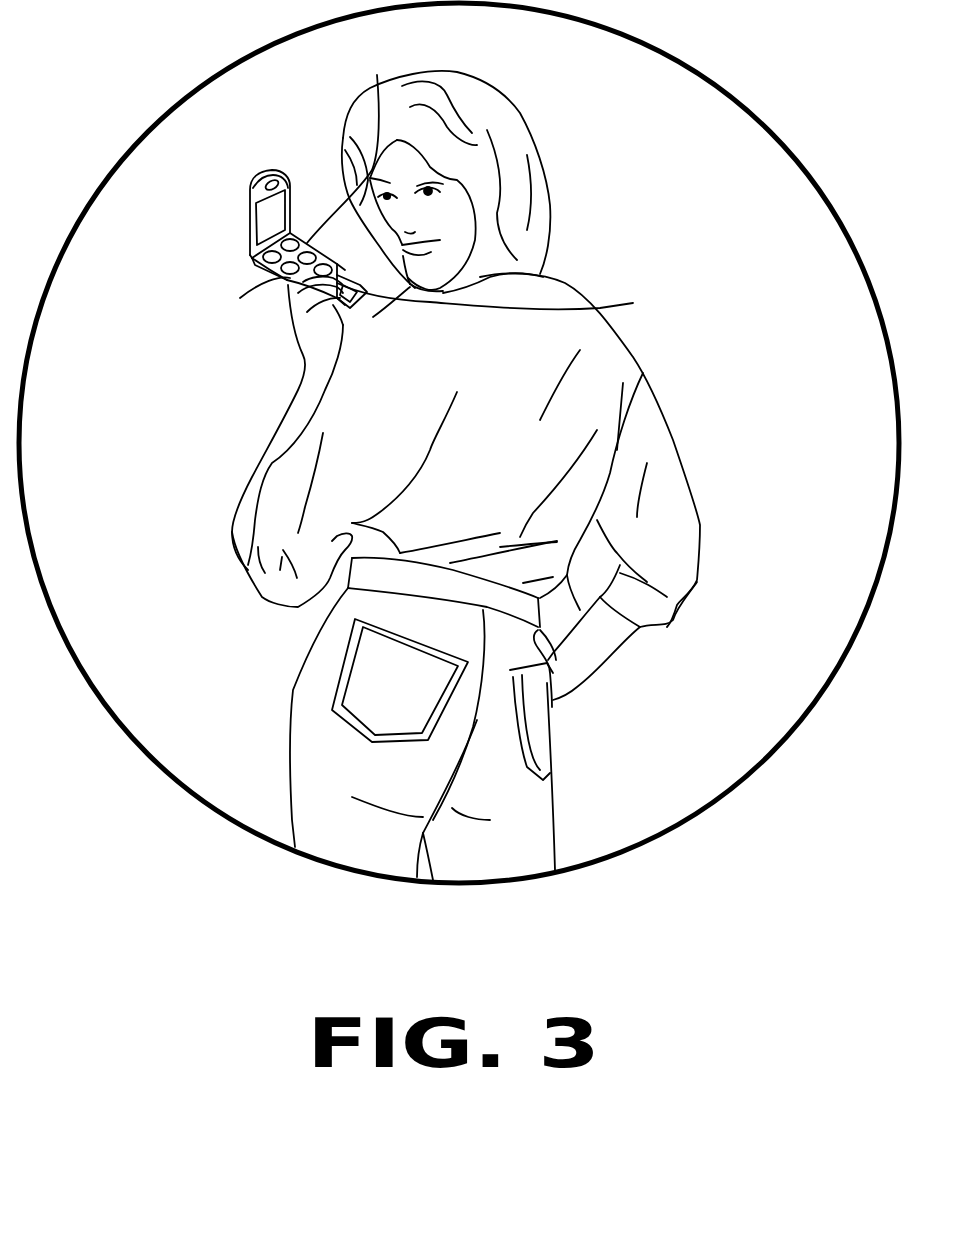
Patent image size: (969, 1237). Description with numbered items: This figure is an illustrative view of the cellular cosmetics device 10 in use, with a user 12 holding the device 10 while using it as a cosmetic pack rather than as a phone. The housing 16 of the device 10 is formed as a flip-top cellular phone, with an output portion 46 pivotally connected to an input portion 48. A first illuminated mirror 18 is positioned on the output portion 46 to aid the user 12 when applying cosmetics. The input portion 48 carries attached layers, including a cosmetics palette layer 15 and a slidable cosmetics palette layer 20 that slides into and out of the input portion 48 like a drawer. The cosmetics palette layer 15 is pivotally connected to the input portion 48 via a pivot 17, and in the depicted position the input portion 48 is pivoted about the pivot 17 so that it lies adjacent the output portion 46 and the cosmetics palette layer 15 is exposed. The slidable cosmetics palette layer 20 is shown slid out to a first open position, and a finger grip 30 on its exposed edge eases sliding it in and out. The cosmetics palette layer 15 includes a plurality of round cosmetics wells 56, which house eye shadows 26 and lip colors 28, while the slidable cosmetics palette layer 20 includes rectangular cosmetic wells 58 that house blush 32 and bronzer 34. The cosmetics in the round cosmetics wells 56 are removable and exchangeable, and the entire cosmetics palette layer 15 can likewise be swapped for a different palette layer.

The cellular cosmetics device 10 is at (166, 238).
The user 12 is at (507, 163).
The cosmetics palette layer 15 is at (508, 302).
The housing 16 is at (305, 175).
The pivot 17 is at (252, 257).
The first illuminated mirror 18 is at (263, 212).
The slidable cosmetics palette layer 20 is at (305, 365).
The eye shadows 26 is at (302, 250).
The lip colors 28 is at (290, 278).
The finger grip 30 is at (367, 297).
The blush 32 is at (385, 193).
The bronzer 34 is at (367, 303).
The output portion 46 is at (290, 250).
The input portion 48 is at (354, 142).
The round cosmetics wells 56 is at (293, 280).
The rectangular cosmetic wells 58 is at (360, 310).